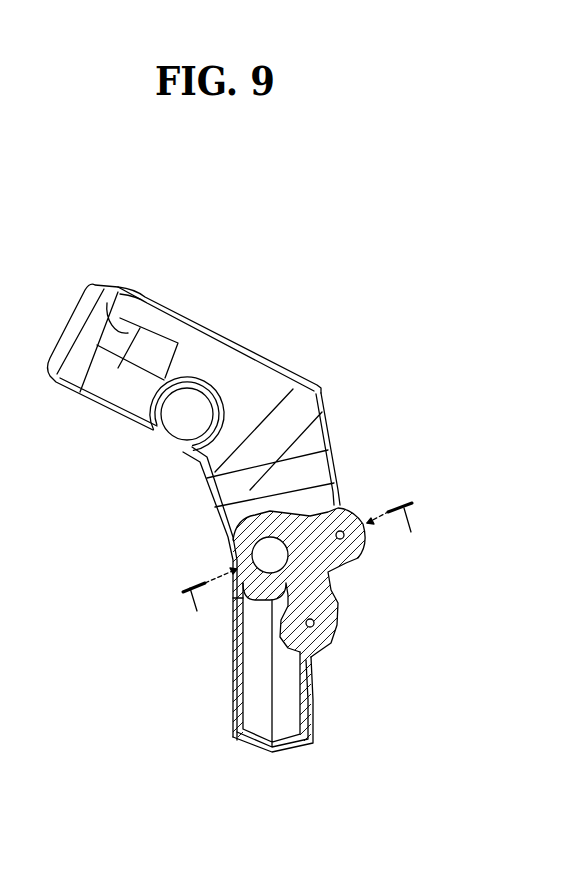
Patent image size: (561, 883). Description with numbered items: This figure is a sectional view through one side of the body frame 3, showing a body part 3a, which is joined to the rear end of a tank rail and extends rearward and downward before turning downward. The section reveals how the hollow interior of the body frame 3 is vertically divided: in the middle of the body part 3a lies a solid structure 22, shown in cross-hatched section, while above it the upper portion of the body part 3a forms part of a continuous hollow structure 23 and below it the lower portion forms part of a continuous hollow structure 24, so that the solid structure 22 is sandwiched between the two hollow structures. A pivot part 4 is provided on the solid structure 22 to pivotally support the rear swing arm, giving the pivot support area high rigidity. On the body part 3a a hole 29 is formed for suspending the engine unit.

The body frame 3 is at (203, 327).
The continuous hollow structure 23 is at (228, 372).
The body part 3a is at (328, 416).
The hole 29 is at (187, 425).
The pivot part 4 is at (228, 541).
The solid structure 22 is at (329, 585).
The continuous hollow structure 24 is at (308, 693).